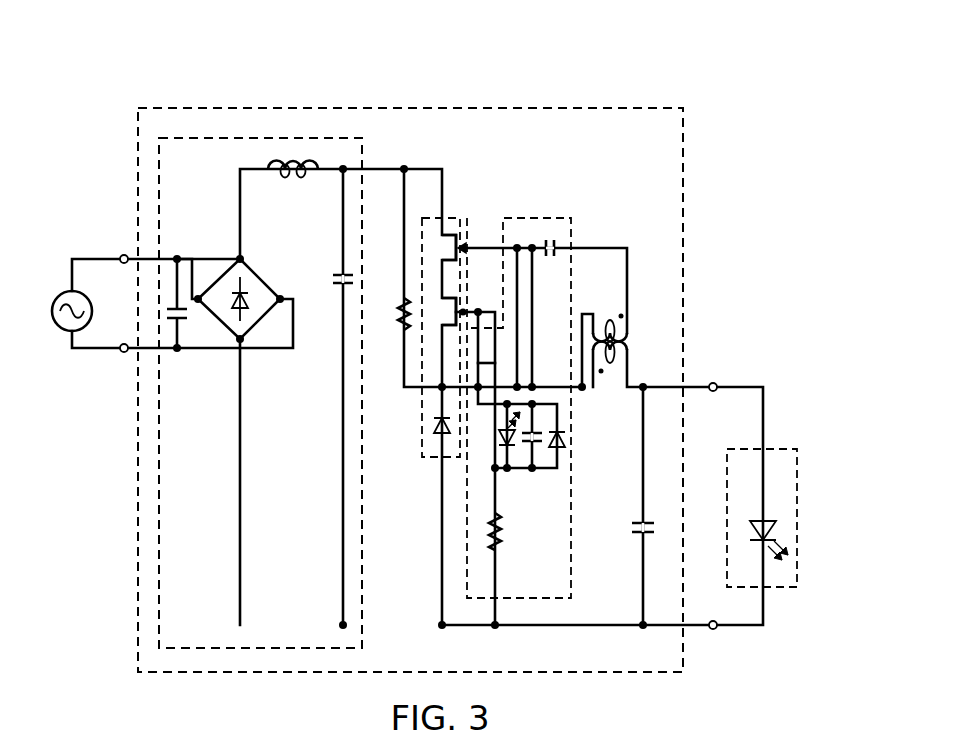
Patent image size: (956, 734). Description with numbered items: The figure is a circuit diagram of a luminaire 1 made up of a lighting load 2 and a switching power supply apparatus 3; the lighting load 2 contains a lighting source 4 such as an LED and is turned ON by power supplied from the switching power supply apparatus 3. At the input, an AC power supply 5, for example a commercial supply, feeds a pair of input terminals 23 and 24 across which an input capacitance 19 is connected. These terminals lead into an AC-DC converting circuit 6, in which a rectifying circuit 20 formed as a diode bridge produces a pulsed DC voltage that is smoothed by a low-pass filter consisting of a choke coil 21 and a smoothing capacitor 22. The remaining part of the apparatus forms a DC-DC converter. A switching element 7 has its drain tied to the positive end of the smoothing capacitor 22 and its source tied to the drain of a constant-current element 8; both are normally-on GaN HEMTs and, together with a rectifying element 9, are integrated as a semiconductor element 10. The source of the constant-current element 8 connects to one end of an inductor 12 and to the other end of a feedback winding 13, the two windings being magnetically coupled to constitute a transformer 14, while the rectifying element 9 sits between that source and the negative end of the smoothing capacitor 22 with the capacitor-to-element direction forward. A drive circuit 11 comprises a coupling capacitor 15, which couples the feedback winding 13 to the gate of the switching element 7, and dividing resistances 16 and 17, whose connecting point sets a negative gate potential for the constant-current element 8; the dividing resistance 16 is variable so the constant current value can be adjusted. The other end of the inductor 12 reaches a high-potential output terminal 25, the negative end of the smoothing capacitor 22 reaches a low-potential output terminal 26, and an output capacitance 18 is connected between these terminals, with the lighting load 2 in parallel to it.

The luminaire 1 is at (743, 82).
The lighting load 2 is at (772, 449).
The switching power supply apparatus 3 is at (623, 107).
The lighting source 4 is at (777, 528).
The AC power supply 5 is at (60, 293).
The AC-DC converting circuit 6 is at (294, 138).
The switching element 7 is at (448, 232).
The constant-current element 8 is at (443, 308).
The rectifying element 9 is at (440, 428).
The semiconductor element 10 is at (470, 217).
The drive circuit 11 is at (517, 217).
The inductor 12 is at (630, 349).
The feedback winding 13 is at (630, 323).
The transformer 14 is at (687, 311).
The coupling capacitor 15 is at (551, 237).
The dividing resistance 16 is at (514, 444).
The dividing resistance 17 is at (499, 536).
The output capacitance 18 is at (631, 524).
The input capacitance 19 is at (188, 313).
The rectifying circuit 20 is at (218, 280).
The choke coil 21 is at (292, 176).
The smoothing capacitor 22 is at (330, 280).
The input terminal 23 is at (123, 255).
The input terminal 24 is at (124, 352).
The high-potential output terminal 25 is at (715, 383).
The low-potential output terminal 26 is at (714, 629).